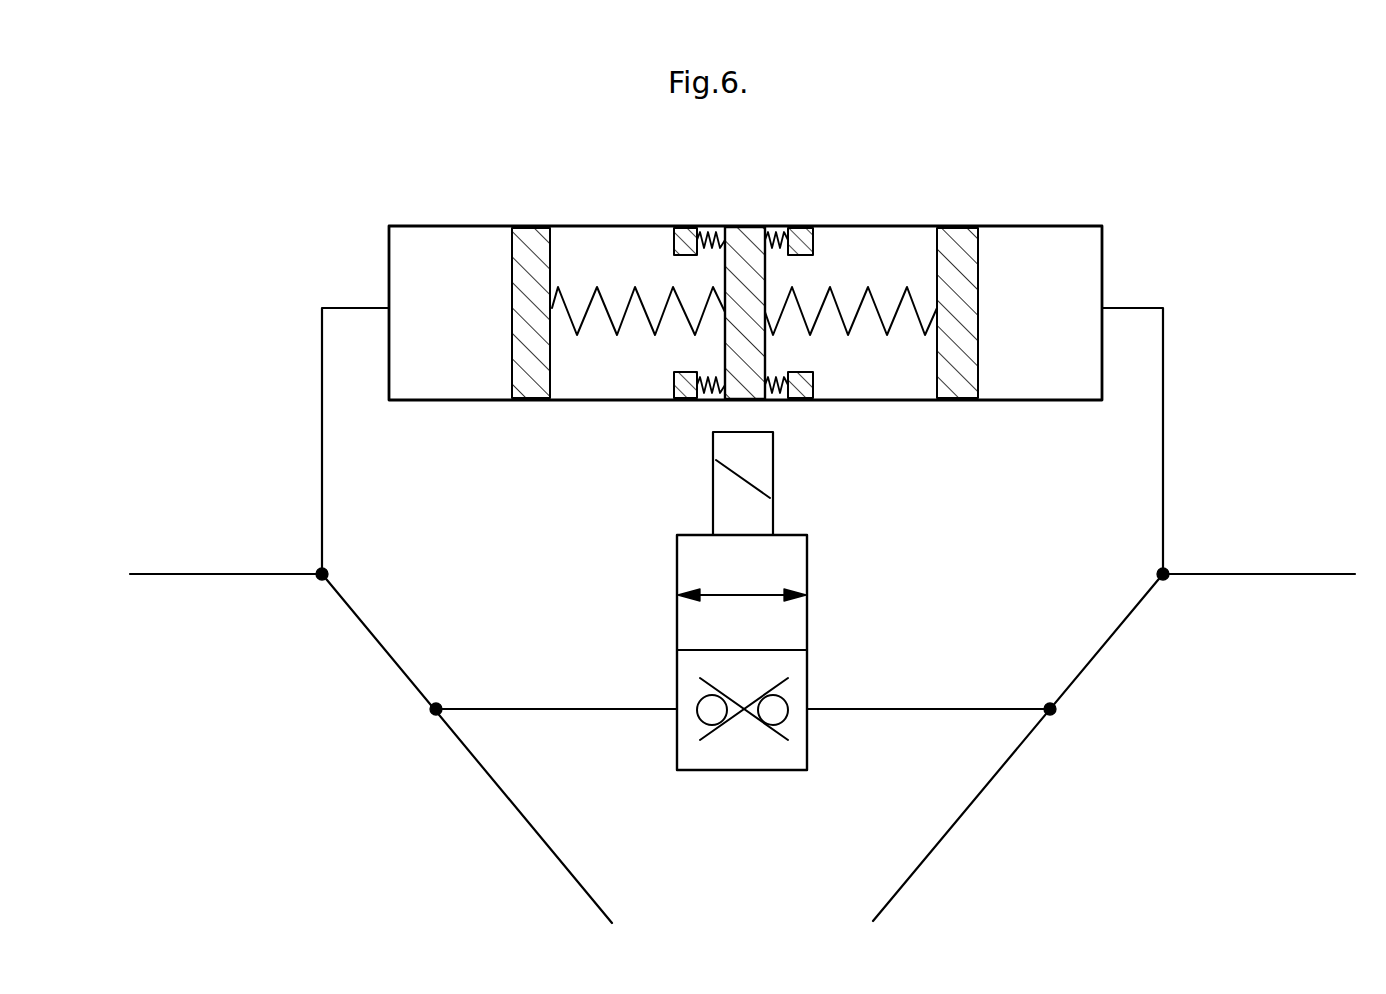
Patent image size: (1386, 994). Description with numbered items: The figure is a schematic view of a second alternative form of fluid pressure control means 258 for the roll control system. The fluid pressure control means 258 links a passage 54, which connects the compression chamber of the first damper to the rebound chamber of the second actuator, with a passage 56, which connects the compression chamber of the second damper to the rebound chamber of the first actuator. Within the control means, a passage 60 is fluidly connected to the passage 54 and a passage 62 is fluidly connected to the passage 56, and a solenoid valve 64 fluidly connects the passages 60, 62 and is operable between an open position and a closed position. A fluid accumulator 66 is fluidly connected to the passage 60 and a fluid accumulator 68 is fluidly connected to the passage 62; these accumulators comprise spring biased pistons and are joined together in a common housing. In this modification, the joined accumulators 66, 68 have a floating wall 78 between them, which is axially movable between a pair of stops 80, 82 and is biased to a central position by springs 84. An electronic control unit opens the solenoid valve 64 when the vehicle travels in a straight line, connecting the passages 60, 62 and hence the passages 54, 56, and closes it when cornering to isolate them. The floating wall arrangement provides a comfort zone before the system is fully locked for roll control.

The fluid pressure control means 258 is at (832, 167).
The fluid accumulator 66 is at (442, 226).
The fluid accumulator 68 is at (1050, 226).
The floating wall 78 is at (740, 226).
The stop 80 is at (684, 226).
The stop 82 is at (812, 228).
The springs 84 is at (712, 226).
The solenoid valve 64 is at (808, 548).
The passage 60 is at (322, 514).
The passage 62 is at (1163, 508).
The passage 54 is at (518, 818).
The passage 56 is at (944, 835).